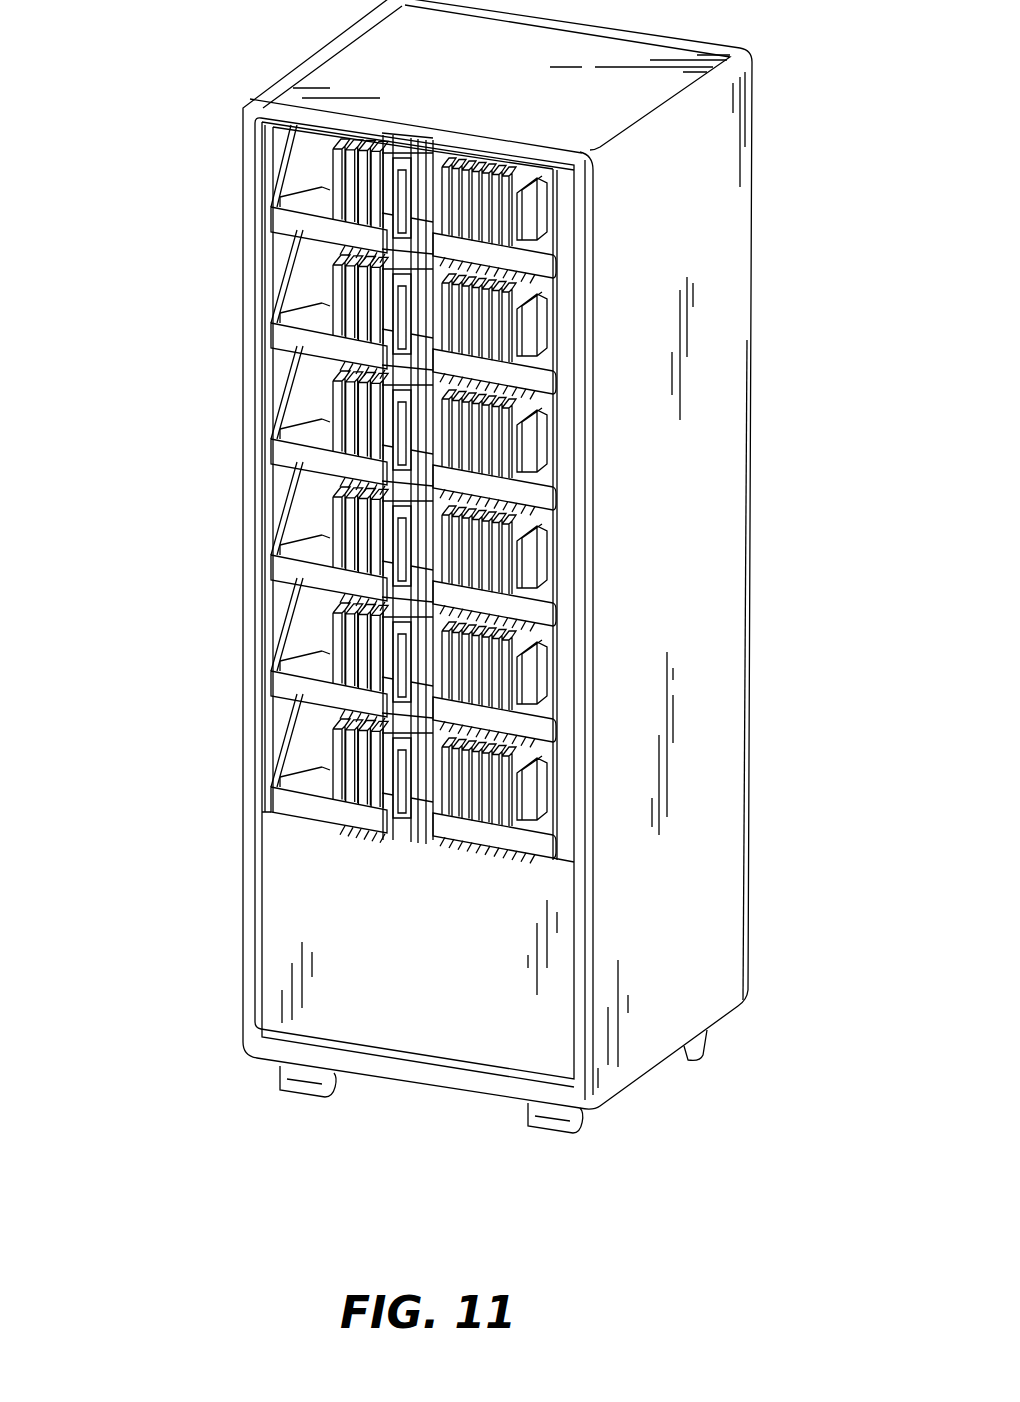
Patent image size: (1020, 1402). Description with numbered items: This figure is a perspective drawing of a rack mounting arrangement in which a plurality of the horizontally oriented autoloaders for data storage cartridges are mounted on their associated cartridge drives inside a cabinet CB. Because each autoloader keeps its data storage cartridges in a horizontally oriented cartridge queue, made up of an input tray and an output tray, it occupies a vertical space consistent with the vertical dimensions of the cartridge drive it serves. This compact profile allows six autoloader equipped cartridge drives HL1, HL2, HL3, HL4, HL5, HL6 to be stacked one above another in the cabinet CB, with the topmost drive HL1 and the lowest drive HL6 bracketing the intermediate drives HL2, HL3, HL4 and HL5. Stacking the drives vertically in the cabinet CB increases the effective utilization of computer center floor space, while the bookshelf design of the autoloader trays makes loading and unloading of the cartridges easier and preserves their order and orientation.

The cabinet CB is at (717, 342).
The autoloader equipped cartridge drive HL1 is at (296, 172).
The autoloader equipped cartridge drive HL2 is at (296, 288).
The autoloader equipped cartridge drive HL3 is at (296, 404).
The autoloader equipped cartridge drive HL4 is at (296, 520).
The autoloader equipped cartridge drive HL5 is at (296, 636).
The autoloader equipped cartridge drive HL6 is at (296, 752).